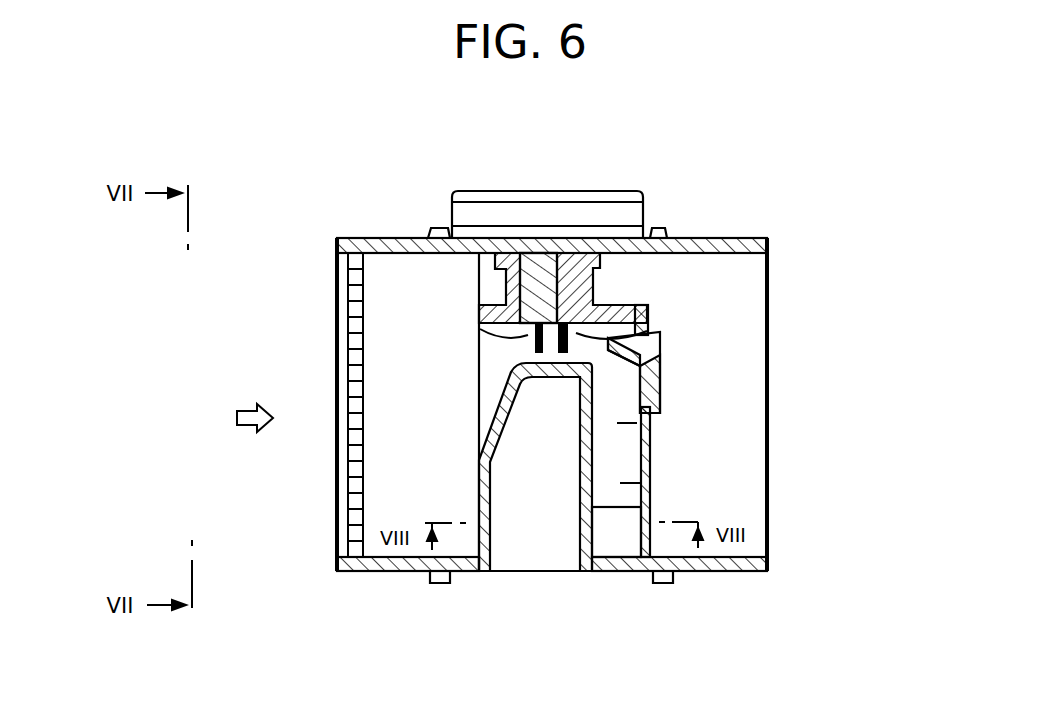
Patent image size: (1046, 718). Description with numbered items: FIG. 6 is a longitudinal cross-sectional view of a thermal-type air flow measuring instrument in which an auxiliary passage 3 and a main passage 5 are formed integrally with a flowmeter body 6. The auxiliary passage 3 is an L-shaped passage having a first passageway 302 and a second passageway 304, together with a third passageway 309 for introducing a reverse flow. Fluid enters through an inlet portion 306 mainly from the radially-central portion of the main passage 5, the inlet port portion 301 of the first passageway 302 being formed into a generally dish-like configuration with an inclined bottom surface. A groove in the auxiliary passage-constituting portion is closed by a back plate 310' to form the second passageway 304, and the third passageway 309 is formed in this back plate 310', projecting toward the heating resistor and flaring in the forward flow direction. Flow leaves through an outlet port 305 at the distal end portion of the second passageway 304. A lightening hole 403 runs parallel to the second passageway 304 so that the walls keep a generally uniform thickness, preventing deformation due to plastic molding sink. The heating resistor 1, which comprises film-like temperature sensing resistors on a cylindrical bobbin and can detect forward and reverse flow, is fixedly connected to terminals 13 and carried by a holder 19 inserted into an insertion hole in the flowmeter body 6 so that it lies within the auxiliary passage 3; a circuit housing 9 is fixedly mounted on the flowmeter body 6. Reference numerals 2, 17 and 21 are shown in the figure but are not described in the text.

The heating resistor 1 is at (477, 344).
The sensor holder 2 is at (578, 327).
The auxiliary passage 3 is at (620, 485).
The main passage 5 is at (403, 438).
The flowmeter body 6 is at (434, 229).
The circuit housing 9 is at (545, 212).
The terminals 13 is at (470, 336).
The air flow direction 17 is at (236, 419).
The holder 19 is at (558, 293).
The flow rectifier grid 21 is at (355, 263).
The inlet port portion 301 is at (490, 373).
The first passageway 302 is at (468, 332).
The second passageway 304 is at (637, 423).
The outlet port 305 is at (625, 548).
The inlet portion 306 is at (494, 391).
The third passageway 309 is at (653, 363).
The back plate 310' is at (748, 482).
The lightening hole 403 is at (533, 515).